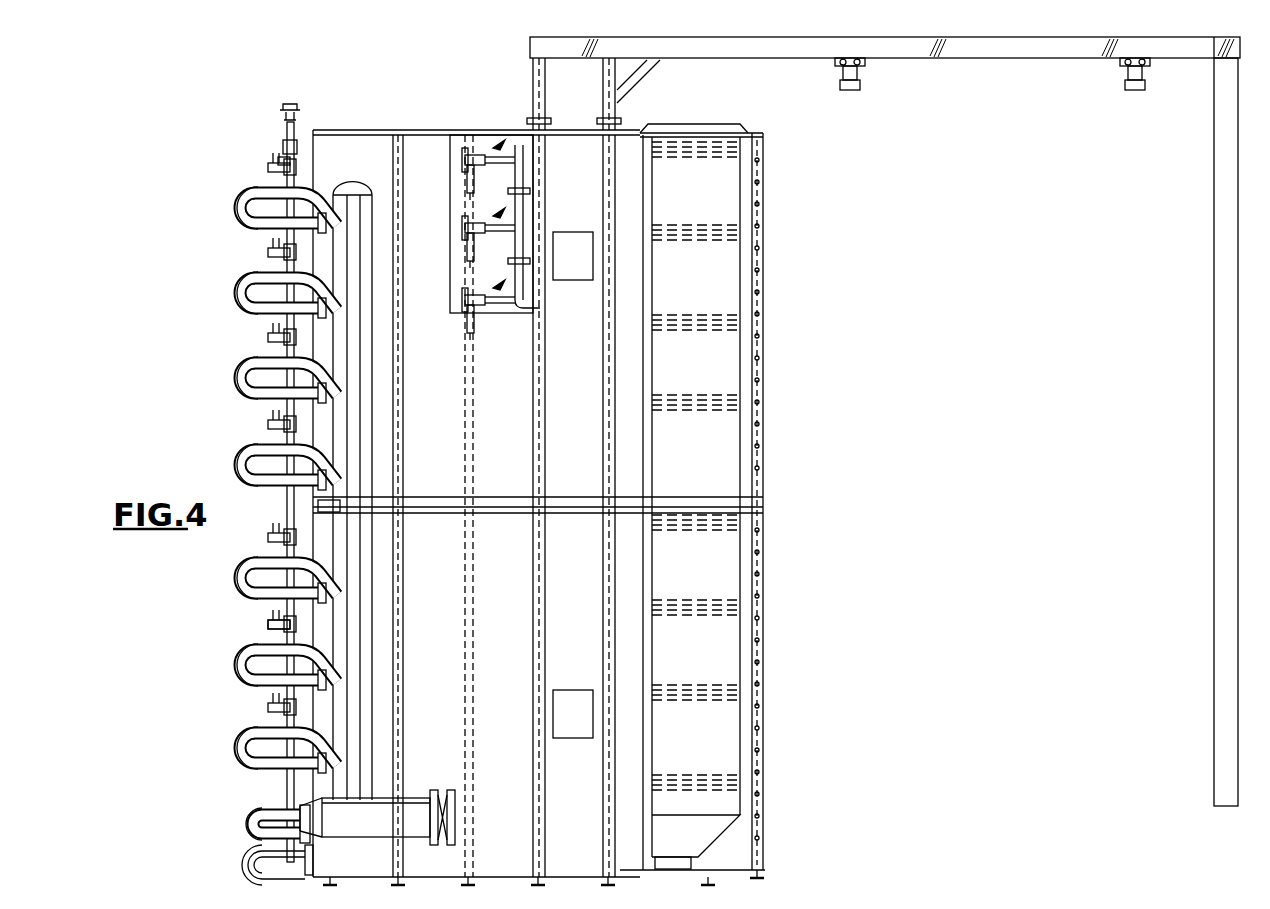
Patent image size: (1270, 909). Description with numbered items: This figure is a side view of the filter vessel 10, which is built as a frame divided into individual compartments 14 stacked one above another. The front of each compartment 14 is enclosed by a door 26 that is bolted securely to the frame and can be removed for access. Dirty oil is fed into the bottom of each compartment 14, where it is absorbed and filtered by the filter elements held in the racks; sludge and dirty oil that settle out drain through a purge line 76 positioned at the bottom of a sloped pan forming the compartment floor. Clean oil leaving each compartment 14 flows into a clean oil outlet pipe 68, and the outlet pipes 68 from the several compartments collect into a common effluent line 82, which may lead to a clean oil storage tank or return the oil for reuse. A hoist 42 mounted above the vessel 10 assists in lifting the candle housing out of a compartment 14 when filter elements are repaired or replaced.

The filter vessel 10 is at (388, 113).
The compartment 14 is at (710, 183).
The door 26 is at (760, 272).
The hoist 42 is at (947, 37).
The purge line 76 is at (253, 360).
The clean oil outlet pipe 68 is at (258, 655).
The effluent line 82 is at (345, 718).